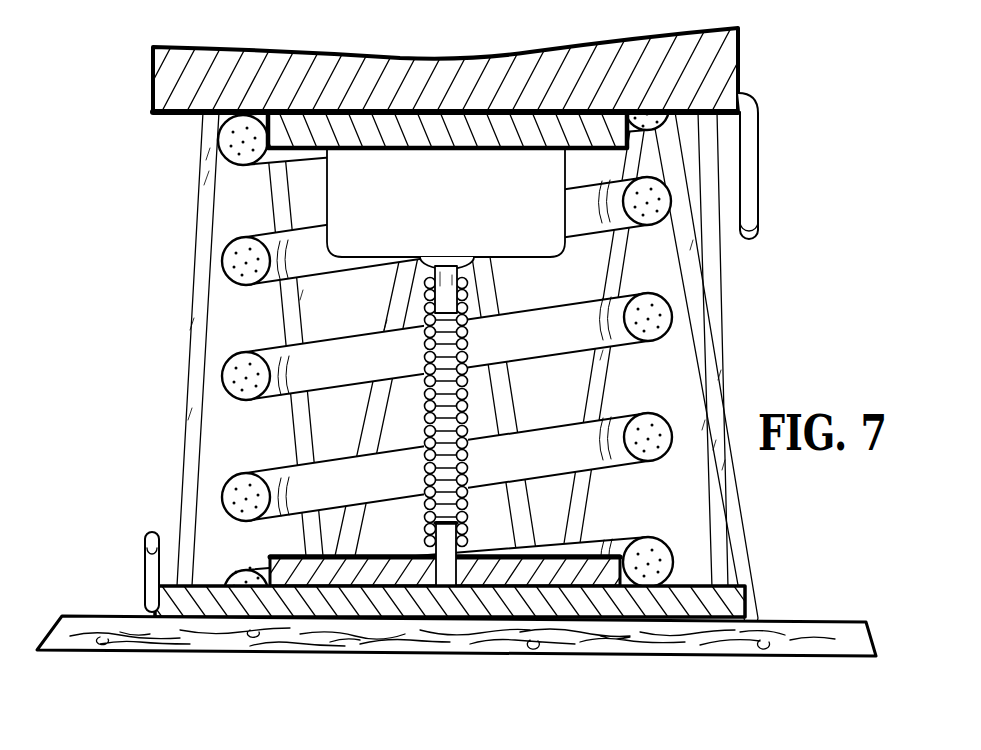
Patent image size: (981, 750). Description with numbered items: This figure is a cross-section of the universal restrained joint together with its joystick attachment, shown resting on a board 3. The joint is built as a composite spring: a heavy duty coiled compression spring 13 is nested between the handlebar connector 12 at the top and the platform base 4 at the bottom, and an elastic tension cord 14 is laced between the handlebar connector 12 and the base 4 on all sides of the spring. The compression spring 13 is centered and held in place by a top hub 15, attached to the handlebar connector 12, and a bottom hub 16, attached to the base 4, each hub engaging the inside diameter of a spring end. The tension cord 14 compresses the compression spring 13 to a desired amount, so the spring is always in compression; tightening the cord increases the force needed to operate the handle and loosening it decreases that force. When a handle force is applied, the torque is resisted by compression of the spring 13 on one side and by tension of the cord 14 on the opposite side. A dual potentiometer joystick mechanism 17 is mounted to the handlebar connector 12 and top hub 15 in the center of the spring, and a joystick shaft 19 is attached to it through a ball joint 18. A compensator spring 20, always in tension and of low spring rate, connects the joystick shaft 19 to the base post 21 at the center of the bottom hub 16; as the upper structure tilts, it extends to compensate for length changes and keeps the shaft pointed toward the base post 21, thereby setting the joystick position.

The base board 3 is at (819, 654).
The platform base 4 is at (677, 618).
The handlebar connector 12 is at (640, 96).
The compression spring 13 is at (657, 331).
The elastic tension cord 14 is at (467, 362).
The top hub 15 is at (592, 142).
The bottom hub 16 is at (551, 586).
The joystick mechanism 17 is at (458, 234).
The ball joint 18 is at (425, 264).
The joystick shaft 19 is at (438, 305).
The compensator spring 20 is at (464, 432).
The base post 21 is at (456, 553).